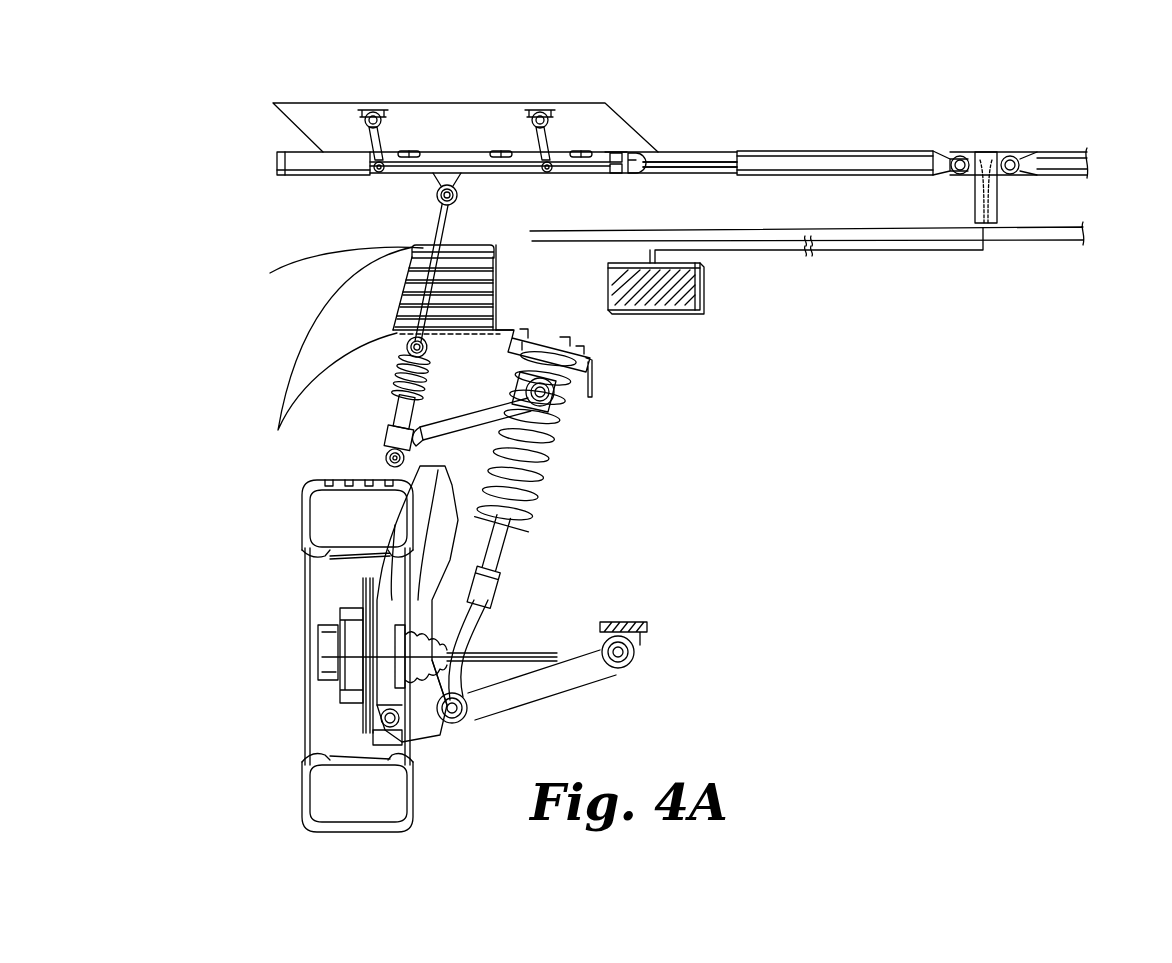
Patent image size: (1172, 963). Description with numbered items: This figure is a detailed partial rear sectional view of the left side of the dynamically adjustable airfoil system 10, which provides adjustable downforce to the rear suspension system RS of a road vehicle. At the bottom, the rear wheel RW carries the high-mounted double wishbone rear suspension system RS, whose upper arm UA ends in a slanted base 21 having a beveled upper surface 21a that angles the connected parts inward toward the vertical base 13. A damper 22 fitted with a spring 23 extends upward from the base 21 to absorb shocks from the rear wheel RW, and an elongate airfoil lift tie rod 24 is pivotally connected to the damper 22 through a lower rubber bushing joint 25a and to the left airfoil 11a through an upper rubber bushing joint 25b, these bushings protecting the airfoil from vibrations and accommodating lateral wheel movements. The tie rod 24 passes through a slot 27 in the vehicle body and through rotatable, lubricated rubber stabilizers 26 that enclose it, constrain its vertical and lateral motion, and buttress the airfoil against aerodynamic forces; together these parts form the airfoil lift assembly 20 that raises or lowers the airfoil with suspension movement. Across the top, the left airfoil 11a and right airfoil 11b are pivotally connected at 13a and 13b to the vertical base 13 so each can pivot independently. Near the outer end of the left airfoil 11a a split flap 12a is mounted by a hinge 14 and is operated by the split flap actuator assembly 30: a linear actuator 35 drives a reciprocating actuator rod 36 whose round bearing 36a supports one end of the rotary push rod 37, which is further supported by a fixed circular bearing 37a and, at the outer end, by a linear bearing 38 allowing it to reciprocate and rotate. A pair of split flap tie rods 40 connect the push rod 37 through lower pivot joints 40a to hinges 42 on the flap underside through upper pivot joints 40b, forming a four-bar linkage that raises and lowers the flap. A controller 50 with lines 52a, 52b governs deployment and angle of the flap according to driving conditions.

The dynamically adjustable airfoil system 10 is at (940, 100).
The left airfoil 11a is at (728, 152).
The right airfoil 11b is at (1062, 152).
The split flap 12a is at (605, 103).
The vertical base 13 is at (987, 152).
The pivotal connection 13a is at (965, 150).
The pivotal connection 13b is at (1012, 150).
The hinge 14 is at (493, 152).
The airfoil lift assembly 20 is at (343, 383).
The slanted base 21 is at (368, 440).
The beveled upper surface 21a is at (422, 441).
The damper 22 is at (387, 313).
The spring 23 is at (448, 366).
The airfoil lift tie rod 24 is at (428, 243).
The lower rubber bushing joint 25a is at (369, 325).
The upper rubber bushing joint 25b is at (458, 197).
The rubber stabilizer 26 is at (497, 262).
The slot 27 is at (337, 274).
The split flap actuator assembly 30 is at (258, 140).
The linear actuator 35 is at (845, 152).
The actuator rod 36 is at (705, 170).
The bearing 36a is at (636, 175).
The rotary push rod 37 is at (615, 175).
The fixed circular bearing 37a is at (620, 152).
The linear bearing 38 is at (305, 172).
The split flap tie rod 40 is at (383, 140).
The lower pivot joint 40a is at (378, 173).
The upper pivot joint 40b is at (365, 113).
The hinge 42 is at (387, 110).
The controller 50 is at (696, 306).
The line 52a is at (870, 229).
The line 52b is at (910, 252).
The rear wheel RW is at (276, 596).
The rear suspension system RS is at (572, 549).
The upper arm UA is at (455, 428).